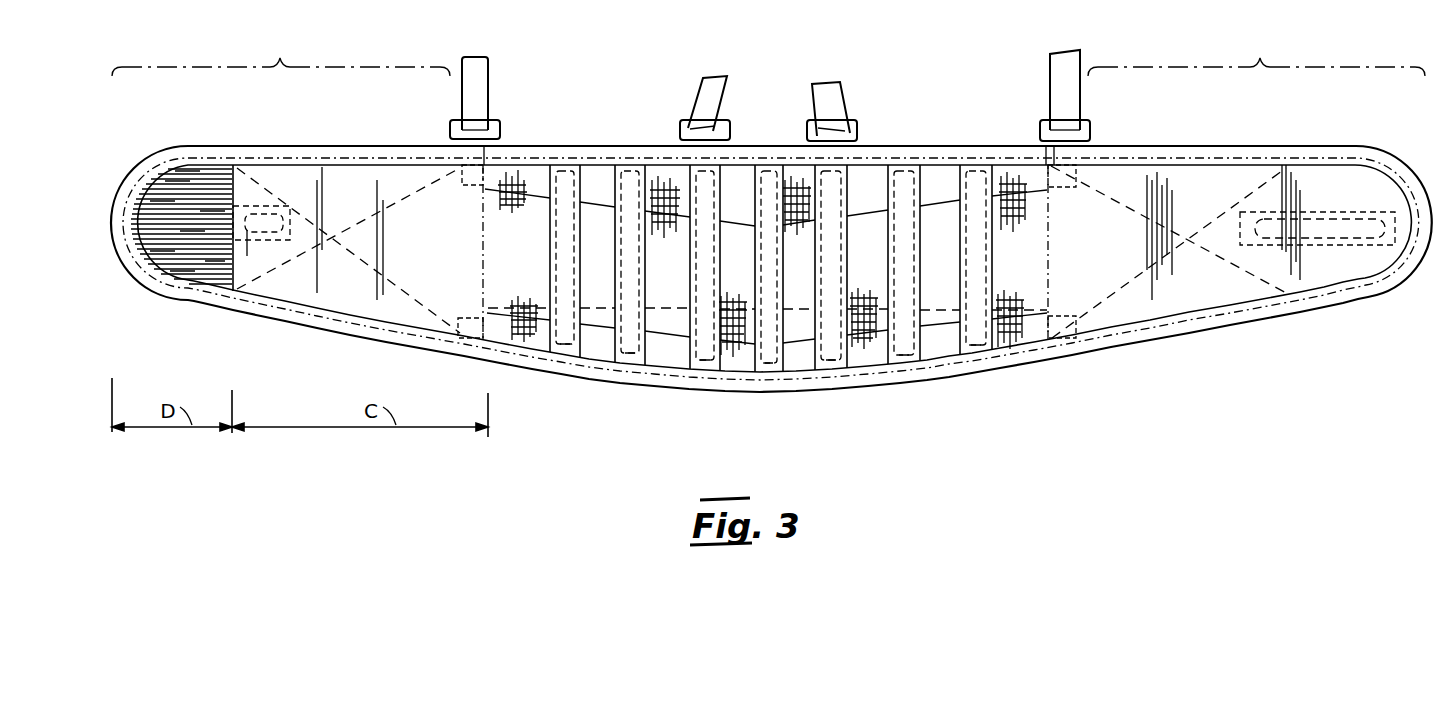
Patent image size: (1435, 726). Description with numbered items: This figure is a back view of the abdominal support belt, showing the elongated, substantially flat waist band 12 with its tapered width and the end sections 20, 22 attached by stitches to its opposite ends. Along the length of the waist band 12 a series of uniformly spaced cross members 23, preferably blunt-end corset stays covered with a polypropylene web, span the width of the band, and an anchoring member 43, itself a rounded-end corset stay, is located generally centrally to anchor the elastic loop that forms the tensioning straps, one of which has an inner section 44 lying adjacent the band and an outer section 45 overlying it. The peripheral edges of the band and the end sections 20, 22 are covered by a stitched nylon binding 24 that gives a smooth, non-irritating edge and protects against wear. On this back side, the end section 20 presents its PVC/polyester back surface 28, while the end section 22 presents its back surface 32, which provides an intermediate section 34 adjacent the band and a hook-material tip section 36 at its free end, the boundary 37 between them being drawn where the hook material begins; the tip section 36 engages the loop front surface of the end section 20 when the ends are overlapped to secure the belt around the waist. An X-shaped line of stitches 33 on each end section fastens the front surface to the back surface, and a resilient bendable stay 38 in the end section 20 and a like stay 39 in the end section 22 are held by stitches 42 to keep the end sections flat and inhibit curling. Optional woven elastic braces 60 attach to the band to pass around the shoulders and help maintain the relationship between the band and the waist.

The waist band 12 is at (520, 170).
The end section 20 is at (1256, 52).
The end section 22 is at (281, 52).
The cross members 23 is at (563, 356).
The binding 24 is at (309, 320).
The back surface 28 is at (1153, 175).
The back surface 32 is at (335, 172).
The X-shaped line of stitches 33 is at (267, 188).
The intermediate section 34 is at (357, 295).
The tip section 36 is at (178, 272).
The pad edge 37 is at (230, 168).
The resilient bendable stay 38 is at (1320, 238).
The stay 39 is at (253, 257).
The stitches 42 is at (290, 222).
The anchoring member 43 is at (764, 367).
The inner section 44 is at (515, 268).
The outer section 45 is at (600, 190).
The braces 60 is at (490, 86).